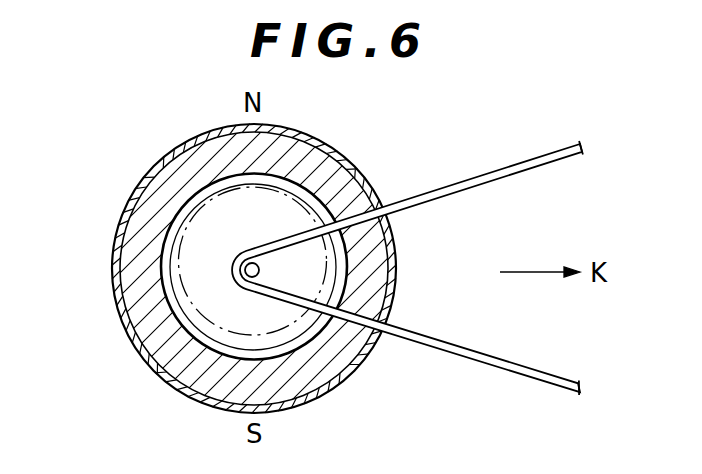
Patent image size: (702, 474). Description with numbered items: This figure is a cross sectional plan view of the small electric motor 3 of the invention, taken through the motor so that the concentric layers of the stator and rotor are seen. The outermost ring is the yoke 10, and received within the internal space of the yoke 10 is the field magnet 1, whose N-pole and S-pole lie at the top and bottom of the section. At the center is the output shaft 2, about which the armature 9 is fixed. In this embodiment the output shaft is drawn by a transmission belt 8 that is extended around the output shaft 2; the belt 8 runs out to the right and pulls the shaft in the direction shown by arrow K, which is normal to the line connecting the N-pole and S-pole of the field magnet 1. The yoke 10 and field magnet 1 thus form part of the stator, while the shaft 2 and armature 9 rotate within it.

The field magnet 1 is at (132, 269).
The output shaft 2 is at (262, 270).
The small electric motor 3 is at (353, 153).
The transmission belt 8 is at (480, 178).
The armature 9 is at (290, 347).
The yoke 10 is at (160, 366).